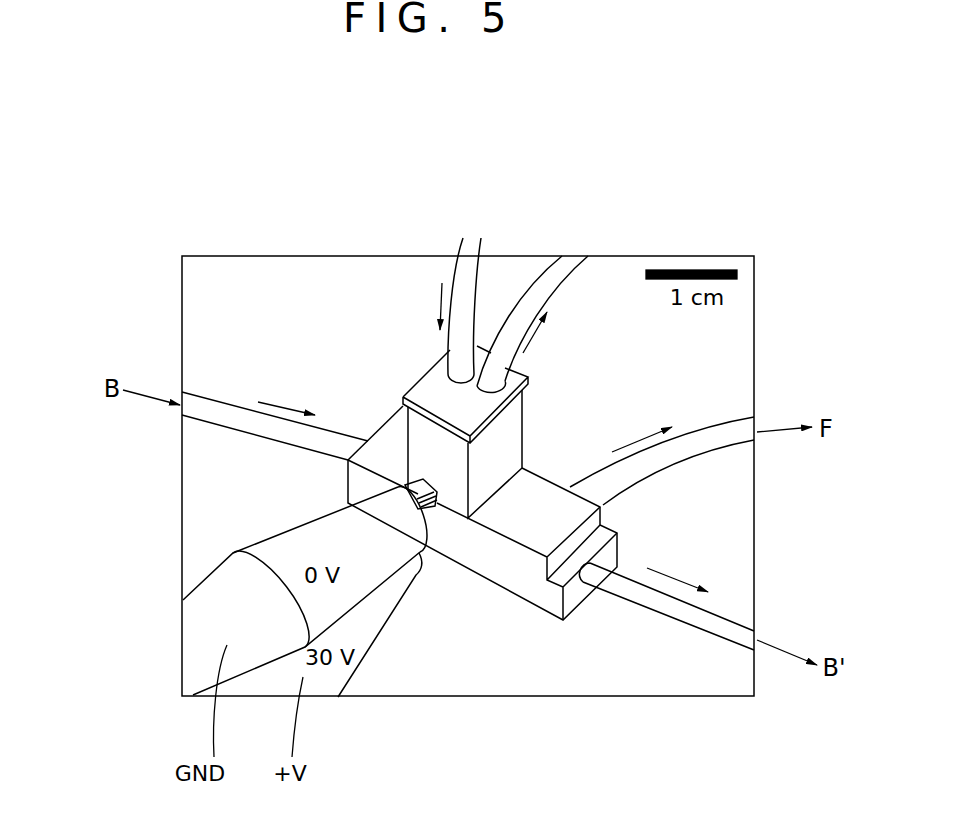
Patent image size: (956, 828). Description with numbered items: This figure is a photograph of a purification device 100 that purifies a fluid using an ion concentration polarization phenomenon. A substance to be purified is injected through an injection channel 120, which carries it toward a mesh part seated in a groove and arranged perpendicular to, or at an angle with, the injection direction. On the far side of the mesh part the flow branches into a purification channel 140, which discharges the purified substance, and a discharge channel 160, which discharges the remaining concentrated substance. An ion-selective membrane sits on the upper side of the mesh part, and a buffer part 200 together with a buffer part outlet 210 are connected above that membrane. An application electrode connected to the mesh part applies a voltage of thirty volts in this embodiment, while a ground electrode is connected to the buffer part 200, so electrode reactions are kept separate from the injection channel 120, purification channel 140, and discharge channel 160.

The purification device 100 is at (155, 310).
The injection channel 120 is at (217, 413).
The purification channel 140 is at (687, 445).
The discharge channel 160 is at (720, 627).
The buffer part 200 is at (463, 278).
The buffer part outlet 210 is at (572, 262).